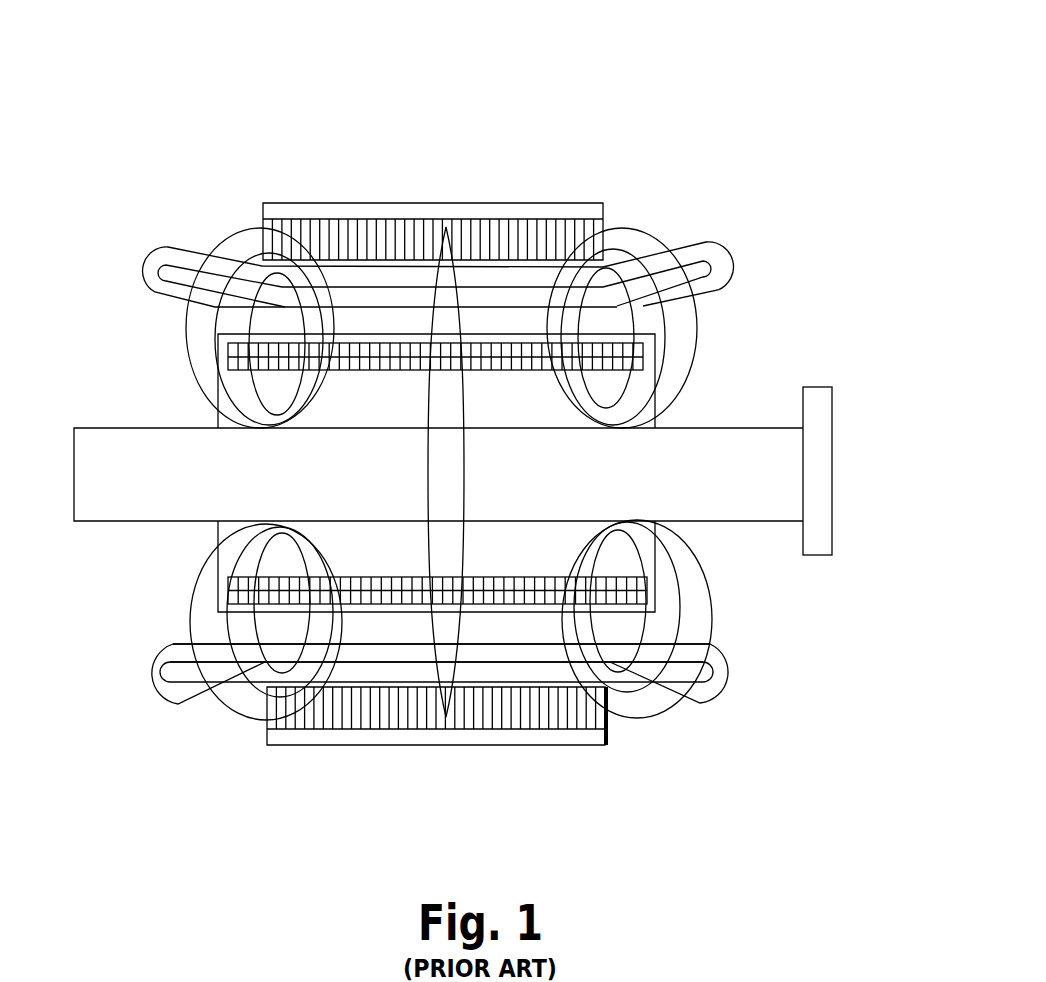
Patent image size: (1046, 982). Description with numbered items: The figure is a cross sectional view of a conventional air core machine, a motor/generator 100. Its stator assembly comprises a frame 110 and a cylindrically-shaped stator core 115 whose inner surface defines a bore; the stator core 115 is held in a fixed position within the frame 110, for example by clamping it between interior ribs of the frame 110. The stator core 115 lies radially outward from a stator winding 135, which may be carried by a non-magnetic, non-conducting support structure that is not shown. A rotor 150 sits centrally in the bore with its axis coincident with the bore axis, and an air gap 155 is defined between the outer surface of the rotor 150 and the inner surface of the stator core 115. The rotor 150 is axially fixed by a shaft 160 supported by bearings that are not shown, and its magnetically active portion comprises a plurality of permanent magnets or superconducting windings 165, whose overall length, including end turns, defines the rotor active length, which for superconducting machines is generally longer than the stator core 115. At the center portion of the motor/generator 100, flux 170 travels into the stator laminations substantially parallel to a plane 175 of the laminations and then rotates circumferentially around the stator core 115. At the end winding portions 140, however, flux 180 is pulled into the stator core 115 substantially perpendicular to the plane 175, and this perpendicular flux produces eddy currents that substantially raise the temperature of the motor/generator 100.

The motor/generator 100 is at (605, 72).
The frame 110 is at (542, 203).
The stator core 115 is at (353, 228).
The stator winding 135 is at (228, 262).
The end winding portions 140 is at (720, 245).
The rotor 150 is at (657, 407).
The air gap 155 is at (233, 322).
The shaft 160 is at (767, 521).
The permanent magnets or superconducting windings 165 is at (645, 350).
The flux 170 is at (437, 716).
The plane of the stator core laminations 175 is at (608, 730).
The flux 180 is at (193, 591).